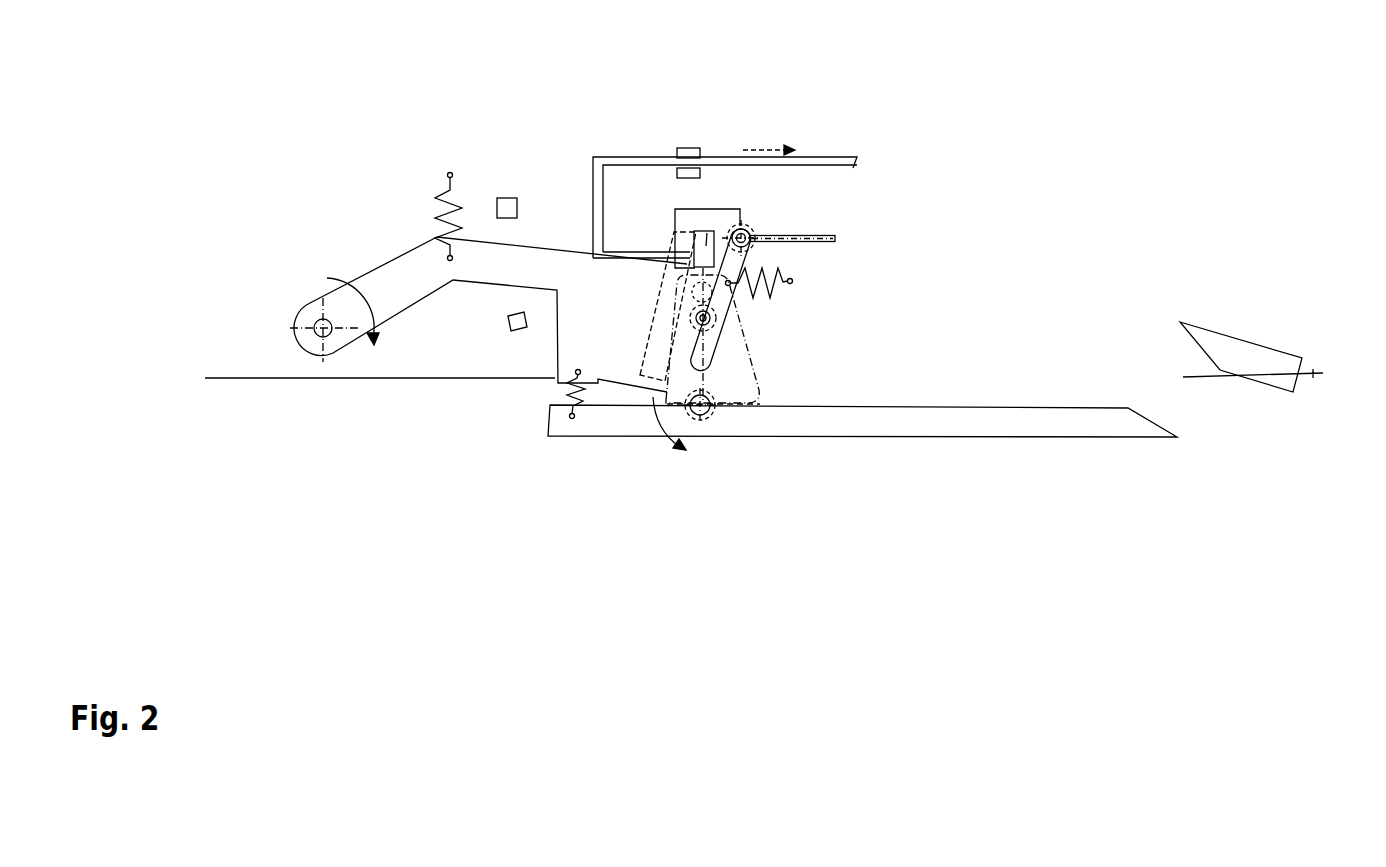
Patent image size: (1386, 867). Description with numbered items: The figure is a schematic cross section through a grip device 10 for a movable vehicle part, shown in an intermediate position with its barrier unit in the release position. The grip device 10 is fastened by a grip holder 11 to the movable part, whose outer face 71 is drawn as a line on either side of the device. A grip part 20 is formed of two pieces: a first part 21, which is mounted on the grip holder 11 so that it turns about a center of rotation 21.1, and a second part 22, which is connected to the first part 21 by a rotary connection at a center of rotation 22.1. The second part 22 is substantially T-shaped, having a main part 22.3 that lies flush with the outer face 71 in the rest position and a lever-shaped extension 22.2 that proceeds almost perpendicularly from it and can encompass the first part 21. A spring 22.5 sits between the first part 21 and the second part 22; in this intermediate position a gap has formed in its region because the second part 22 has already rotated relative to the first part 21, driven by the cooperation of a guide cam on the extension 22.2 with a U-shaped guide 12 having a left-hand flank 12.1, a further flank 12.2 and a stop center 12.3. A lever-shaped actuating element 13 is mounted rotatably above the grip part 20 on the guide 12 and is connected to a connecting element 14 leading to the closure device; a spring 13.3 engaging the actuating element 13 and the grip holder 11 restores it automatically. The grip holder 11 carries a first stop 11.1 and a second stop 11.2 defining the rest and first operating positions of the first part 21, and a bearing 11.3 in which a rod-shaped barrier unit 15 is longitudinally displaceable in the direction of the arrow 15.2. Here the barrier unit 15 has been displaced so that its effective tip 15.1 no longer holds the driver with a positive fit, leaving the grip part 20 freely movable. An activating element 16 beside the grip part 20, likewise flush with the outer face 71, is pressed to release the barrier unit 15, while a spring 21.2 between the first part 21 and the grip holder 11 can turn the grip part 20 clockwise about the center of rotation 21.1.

The grip device 10 is at (630, 488).
The grip holder 11 is at (480, 323).
The first stop 11.1 is at (508, 198).
The second stop 11.2 is at (507, 330).
The bearing 11.3 is at (690, 153).
The U-shaped guide 12 is at (727, 212).
The left-hand guide flank 12.1 is at (653, 370).
The left-hand guide flank 12.2 is at (722, 331).
The stop center 12.3 is at (702, 232).
The actuating element 13 is at (747, 258).
The spring 13.3 is at (792, 283).
The connecting element 14 is at (813, 235).
The barrier unit 15 is at (730, 111).
The effective tip 15.1 is at (687, 253).
The arrow 15.2 is at (766, 150).
The activating element 16 is at (1253, 353).
The grip part 20 is at (949, 282).
The first part 21 is at (610, 335).
The center of rotation 21.1 is at (318, 322).
The spring 21.2 is at (457, 190).
The second part 22 is at (862, 452).
The center of rotation 22.1 is at (700, 410).
The lever-shaped extension 22.2 is at (722, 375).
The main part 22.3 is at (883, 427).
The spring 22.5 is at (568, 396).
The outer face 71 is at (212, 378).